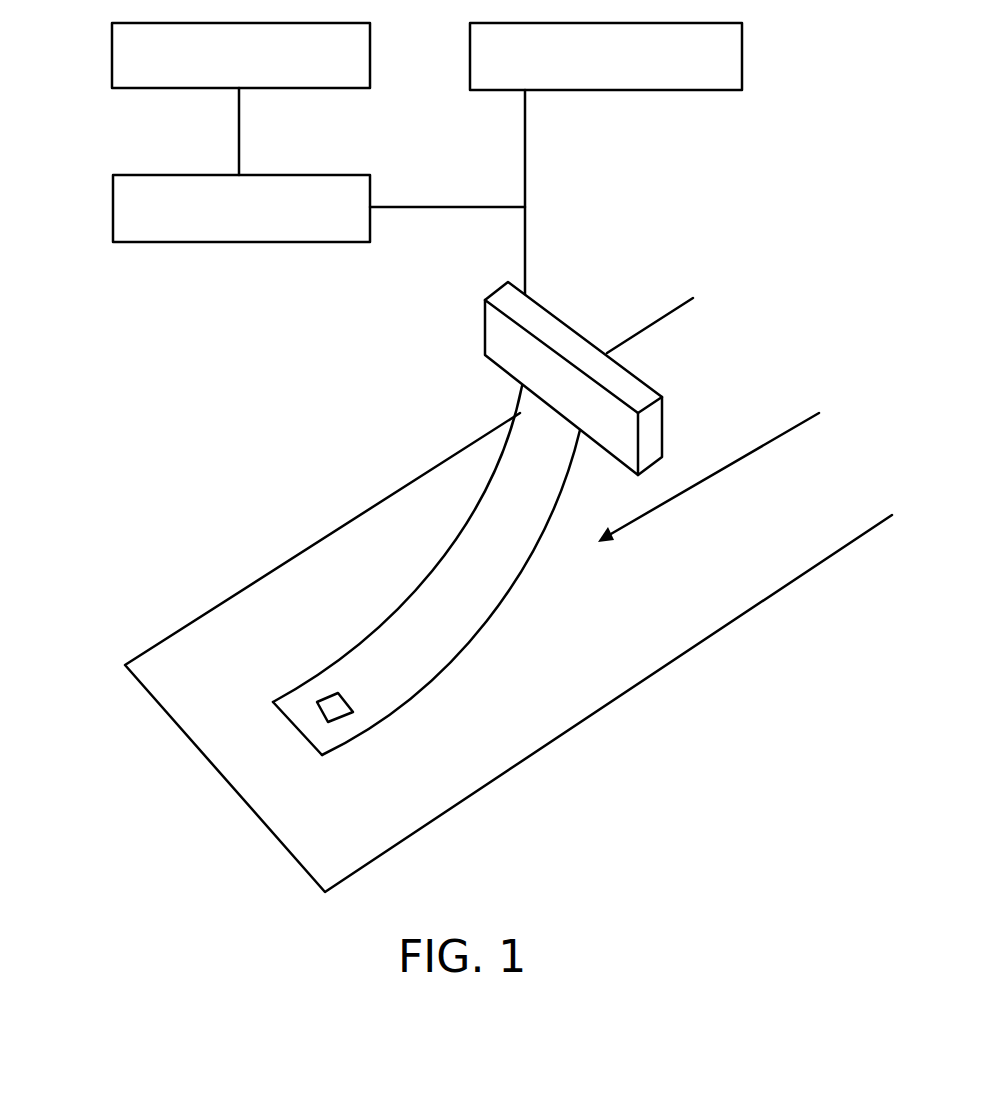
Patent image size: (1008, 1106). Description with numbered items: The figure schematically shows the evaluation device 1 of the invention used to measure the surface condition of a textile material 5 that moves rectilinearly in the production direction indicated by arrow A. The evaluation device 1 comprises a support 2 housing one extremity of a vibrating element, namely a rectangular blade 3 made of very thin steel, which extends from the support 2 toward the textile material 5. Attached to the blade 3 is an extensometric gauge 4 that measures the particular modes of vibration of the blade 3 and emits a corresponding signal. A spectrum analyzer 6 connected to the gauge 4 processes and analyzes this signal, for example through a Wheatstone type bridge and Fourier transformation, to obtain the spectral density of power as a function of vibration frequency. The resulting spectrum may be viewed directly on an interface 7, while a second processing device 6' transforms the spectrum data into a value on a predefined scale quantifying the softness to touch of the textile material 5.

The evaluation device 1 is at (592, 275).
The support 2 is at (653, 430).
The blade 3 is at (487, 575).
The extensometric gauge 4 is at (317, 710).
The textile material 5 is at (643, 718).
The spectrum analyzer 6 is at (312, 210).
The second processing device 6' is at (628, 98).
The interface 7 is at (137, 73).